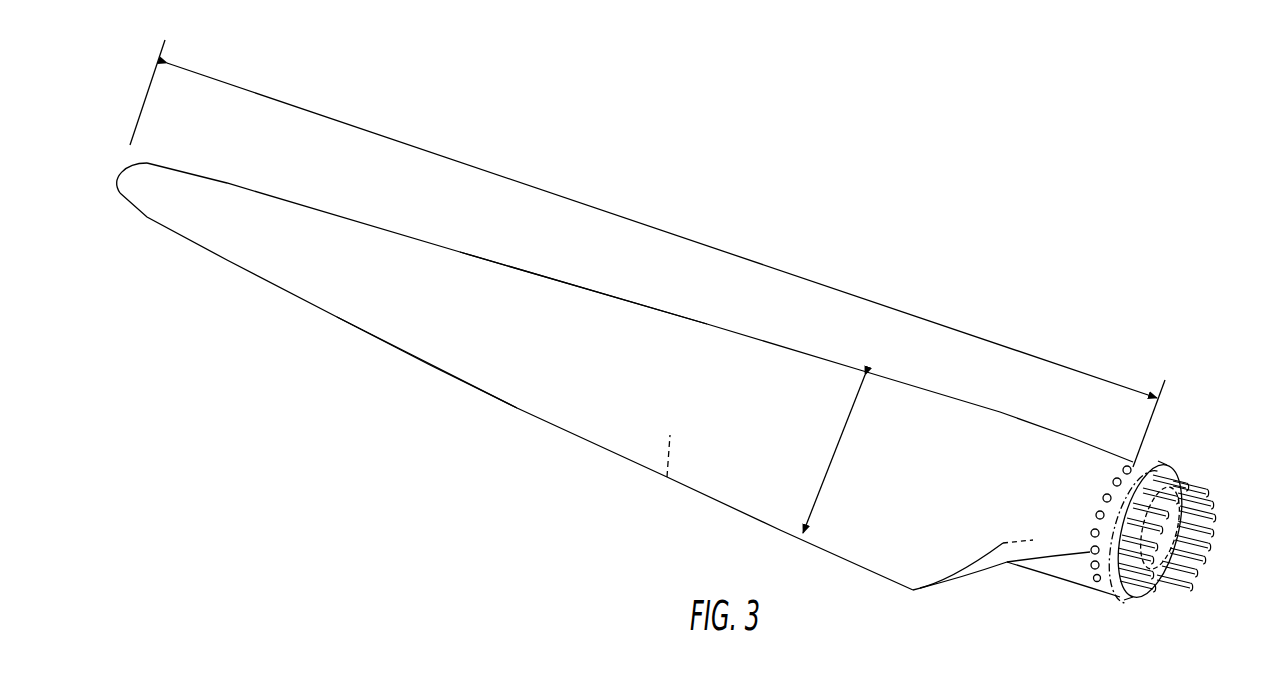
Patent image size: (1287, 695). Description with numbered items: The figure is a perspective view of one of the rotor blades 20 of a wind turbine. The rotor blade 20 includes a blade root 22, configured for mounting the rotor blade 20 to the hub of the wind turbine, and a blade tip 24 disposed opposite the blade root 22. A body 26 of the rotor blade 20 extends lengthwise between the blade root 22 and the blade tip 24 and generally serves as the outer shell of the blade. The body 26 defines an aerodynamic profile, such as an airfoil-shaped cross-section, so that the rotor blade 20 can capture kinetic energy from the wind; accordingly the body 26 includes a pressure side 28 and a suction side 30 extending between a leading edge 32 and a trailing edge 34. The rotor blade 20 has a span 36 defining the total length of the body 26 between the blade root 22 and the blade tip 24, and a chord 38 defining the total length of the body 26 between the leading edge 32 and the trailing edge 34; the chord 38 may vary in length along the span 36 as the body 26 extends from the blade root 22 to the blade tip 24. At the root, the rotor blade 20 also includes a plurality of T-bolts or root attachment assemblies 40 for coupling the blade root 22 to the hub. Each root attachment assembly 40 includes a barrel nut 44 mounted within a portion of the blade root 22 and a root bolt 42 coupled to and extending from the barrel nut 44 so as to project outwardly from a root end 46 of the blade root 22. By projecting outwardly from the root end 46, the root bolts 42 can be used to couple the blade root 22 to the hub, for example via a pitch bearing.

The rotor blade 20 is at (1034, 252).
The blade root 22 is at (1082, 572).
The blade tip 24 is at (116, 180).
The body 26 is at (517, 296).
The pressure side 28 is at (667, 478).
The suction side 30 is at (407, 320).
The leading edge 32 is at (707, 324).
The trailing edge 34 is at (517, 408).
The span 36 is at (693, 240).
The chord 38 is at (832, 467).
The root attachment assembly 40 is at (1078, 526).
The root bolt 42 is at (1205, 512).
The barrel nut 44 is at (1123, 474).
The root end 46 is at (1133, 600).